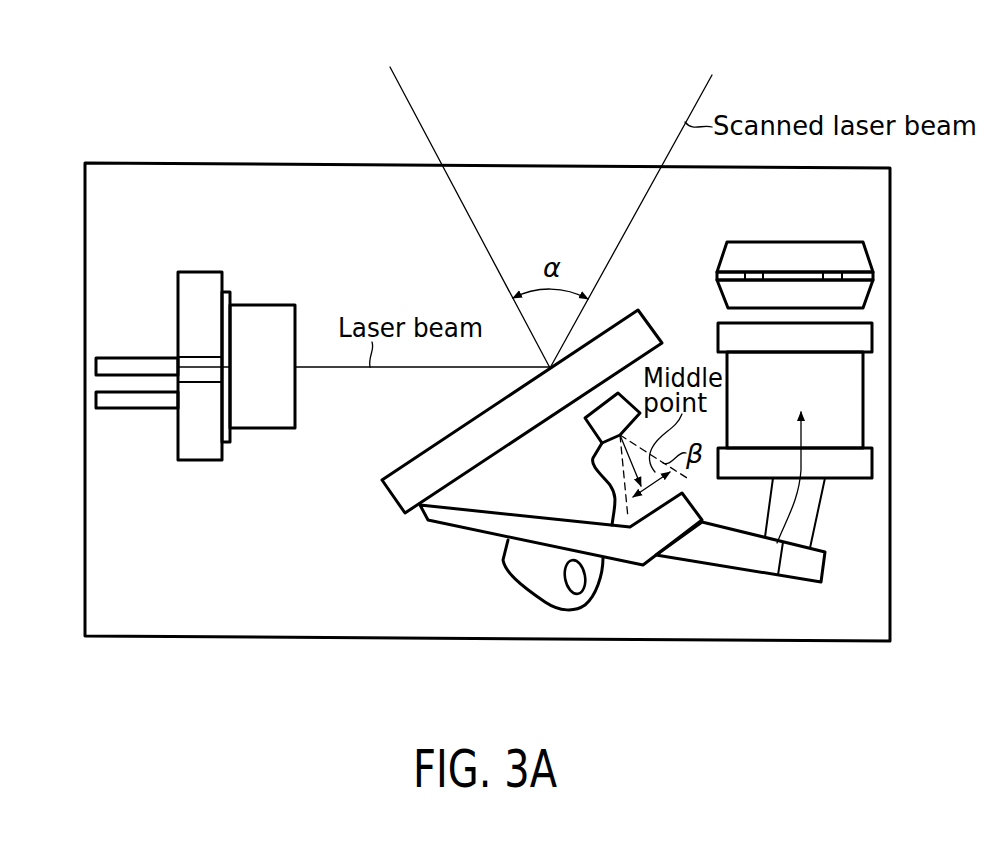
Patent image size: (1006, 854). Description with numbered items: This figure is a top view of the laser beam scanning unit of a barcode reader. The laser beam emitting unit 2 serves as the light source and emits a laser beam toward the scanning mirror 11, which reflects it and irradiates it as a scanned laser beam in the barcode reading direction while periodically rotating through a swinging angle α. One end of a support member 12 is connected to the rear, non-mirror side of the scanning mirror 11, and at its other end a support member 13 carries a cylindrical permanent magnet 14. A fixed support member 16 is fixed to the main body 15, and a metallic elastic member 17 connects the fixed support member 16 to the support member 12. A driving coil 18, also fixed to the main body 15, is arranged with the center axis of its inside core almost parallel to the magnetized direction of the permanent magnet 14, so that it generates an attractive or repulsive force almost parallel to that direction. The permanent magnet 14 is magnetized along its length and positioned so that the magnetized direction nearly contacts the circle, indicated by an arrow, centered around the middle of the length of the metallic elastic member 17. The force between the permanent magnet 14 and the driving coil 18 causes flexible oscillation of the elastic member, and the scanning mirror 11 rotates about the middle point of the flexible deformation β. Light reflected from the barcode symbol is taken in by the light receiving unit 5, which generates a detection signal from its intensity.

The laser beam emitting unit 2 is at (202, 452).
The light receiving unit 5 is at (855, 255).
The scanning mirror 11 is at (403, 497).
The support member 12 is at (622, 548).
The support member 13 is at (762, 565).
The permanent magnet 14 is at (808, 517).
The main body 15 is at (845, 643).
The fixed support member 16 is at (562, 475).
The metallic elastic member 17 is at (656, 472).
The driving coil 18 is at (853, 410).